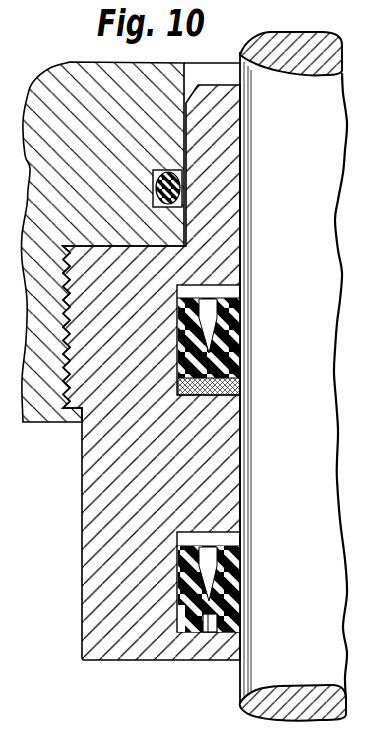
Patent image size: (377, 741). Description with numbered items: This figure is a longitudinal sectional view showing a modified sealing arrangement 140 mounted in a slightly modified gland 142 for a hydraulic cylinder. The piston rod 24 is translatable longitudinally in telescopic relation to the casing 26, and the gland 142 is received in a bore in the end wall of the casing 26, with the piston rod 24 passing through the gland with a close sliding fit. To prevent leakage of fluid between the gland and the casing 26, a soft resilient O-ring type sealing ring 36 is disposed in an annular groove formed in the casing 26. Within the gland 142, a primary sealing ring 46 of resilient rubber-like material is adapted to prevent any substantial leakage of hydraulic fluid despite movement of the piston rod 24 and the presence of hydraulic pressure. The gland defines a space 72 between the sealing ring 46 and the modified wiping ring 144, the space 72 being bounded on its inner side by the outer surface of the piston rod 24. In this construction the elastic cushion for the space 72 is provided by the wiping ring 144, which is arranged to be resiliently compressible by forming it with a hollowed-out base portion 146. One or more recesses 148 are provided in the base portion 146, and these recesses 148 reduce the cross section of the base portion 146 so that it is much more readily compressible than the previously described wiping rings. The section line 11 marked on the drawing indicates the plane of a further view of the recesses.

The piston rod 24 is at (305, 44).
The casing 26 is at (40, 97).
The sealing ring 36 is at (153, 193).
The sealing ring 46 is at (241, 330).
The space 72 is at (231, 539).
The sealing arrangement 140 is at (206, 664).
The gland 142 is at (99, 656).
The wiping ring 144 is at (238, 583).
The base portion 146 is at (184, 619).
The recesses 148 is at (205, 633).
The section line 11 is at (43, 602).